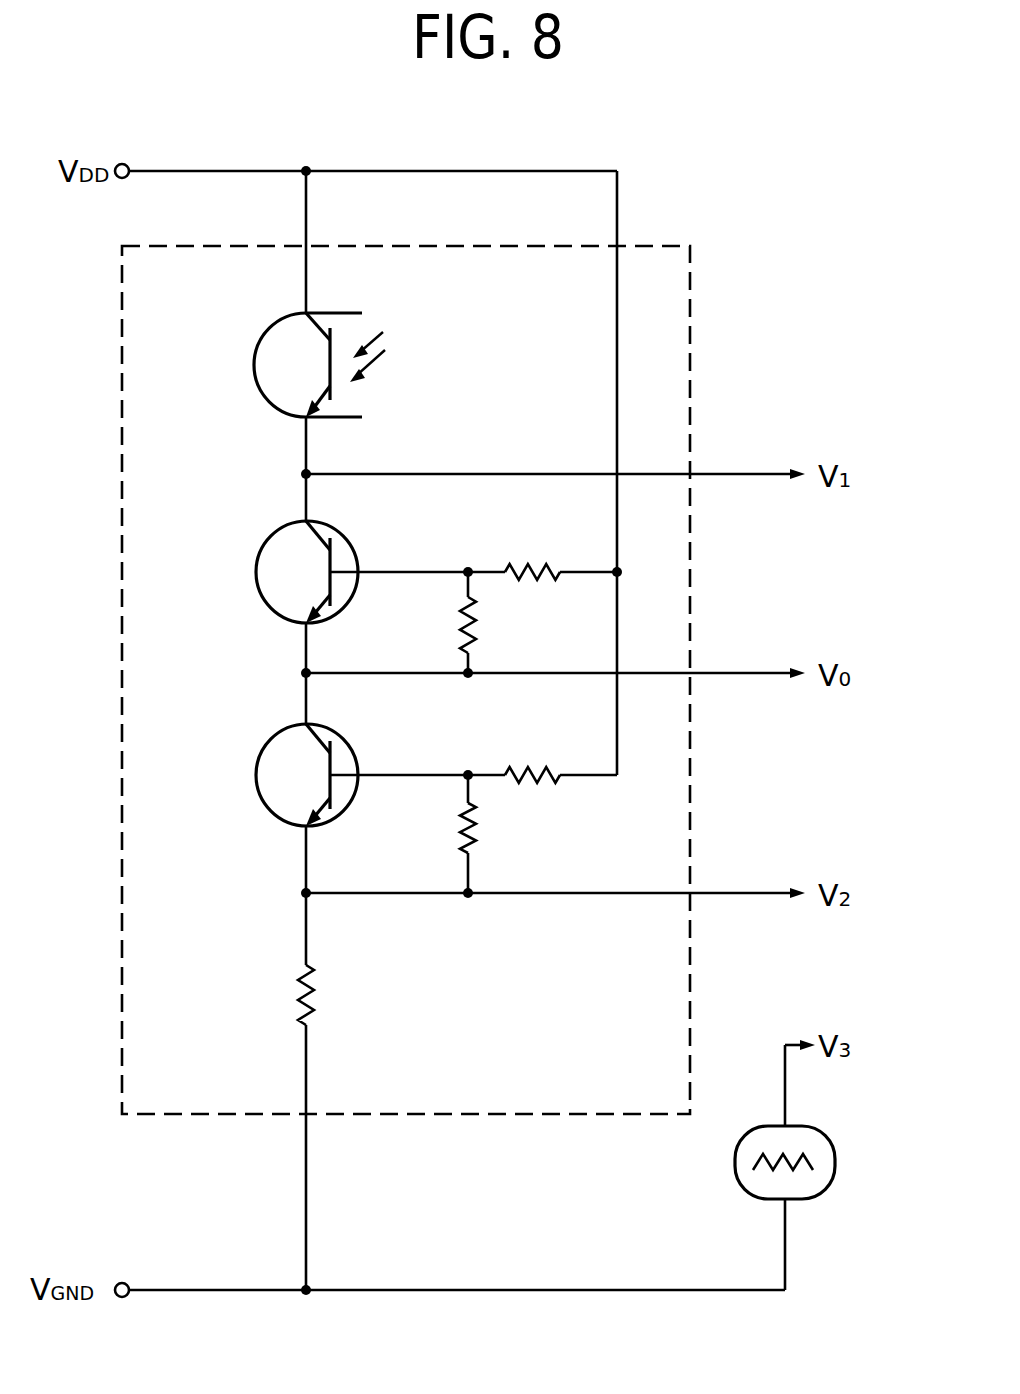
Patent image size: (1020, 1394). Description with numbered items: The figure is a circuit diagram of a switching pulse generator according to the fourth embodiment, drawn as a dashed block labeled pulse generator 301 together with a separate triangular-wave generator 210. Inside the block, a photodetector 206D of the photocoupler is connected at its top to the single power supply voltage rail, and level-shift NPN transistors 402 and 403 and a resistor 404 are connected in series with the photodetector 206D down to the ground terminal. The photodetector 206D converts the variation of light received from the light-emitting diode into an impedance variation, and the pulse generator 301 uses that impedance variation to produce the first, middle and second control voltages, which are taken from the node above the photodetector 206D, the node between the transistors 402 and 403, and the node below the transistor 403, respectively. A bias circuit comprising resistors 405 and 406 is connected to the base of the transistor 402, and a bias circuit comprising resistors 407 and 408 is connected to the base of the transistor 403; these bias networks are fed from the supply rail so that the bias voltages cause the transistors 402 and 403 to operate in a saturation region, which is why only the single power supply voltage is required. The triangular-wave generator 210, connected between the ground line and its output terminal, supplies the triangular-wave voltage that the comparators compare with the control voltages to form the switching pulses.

The pulse generator 301 is at (690, 246).
The photodetector 206D is at (280, 338).
The level-shift NPN transistor 402 is at (257, 580).
The level-shift NPN transistor 403 is at (258, 775).
The resistor 404 is at (298, 976).
The resistor 405 is at (528, 565).
The resistor 406 is at (472, 626).
The resistor 407 is at (535, 765).
The resistor 408 is at (472, 800).
The triangular-wave generator 210 is at (736, 1170).